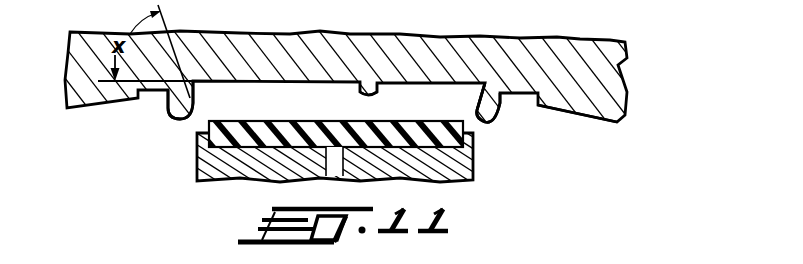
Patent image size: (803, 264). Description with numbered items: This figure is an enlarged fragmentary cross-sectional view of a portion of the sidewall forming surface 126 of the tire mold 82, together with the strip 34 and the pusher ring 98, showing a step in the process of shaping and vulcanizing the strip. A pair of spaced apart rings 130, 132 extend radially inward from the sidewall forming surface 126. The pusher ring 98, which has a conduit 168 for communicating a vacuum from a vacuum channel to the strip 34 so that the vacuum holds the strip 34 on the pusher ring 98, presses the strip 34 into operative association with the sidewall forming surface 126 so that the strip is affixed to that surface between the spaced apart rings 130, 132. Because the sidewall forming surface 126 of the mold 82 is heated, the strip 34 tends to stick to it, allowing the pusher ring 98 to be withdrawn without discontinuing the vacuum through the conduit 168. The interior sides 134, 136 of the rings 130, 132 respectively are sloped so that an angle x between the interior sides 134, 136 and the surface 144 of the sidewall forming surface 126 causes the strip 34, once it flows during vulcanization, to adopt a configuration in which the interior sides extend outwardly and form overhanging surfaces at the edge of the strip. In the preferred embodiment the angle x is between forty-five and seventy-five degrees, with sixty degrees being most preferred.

The tire mold 82 is at (627, 70).
The ring 130 is at (172, 116).
The interior side 134 is at (193, 93).
The surface 144 is at (375, 88).
The interior side 136 is at (478, 100).
The ring 132 is at (495, 127).
The sidewall forming surface 126 is at (590, 121).
The pusher ring 98 is at (197, 166).
The conduit 168 is at (305, 147).
The strip 34 is at (345, 121).